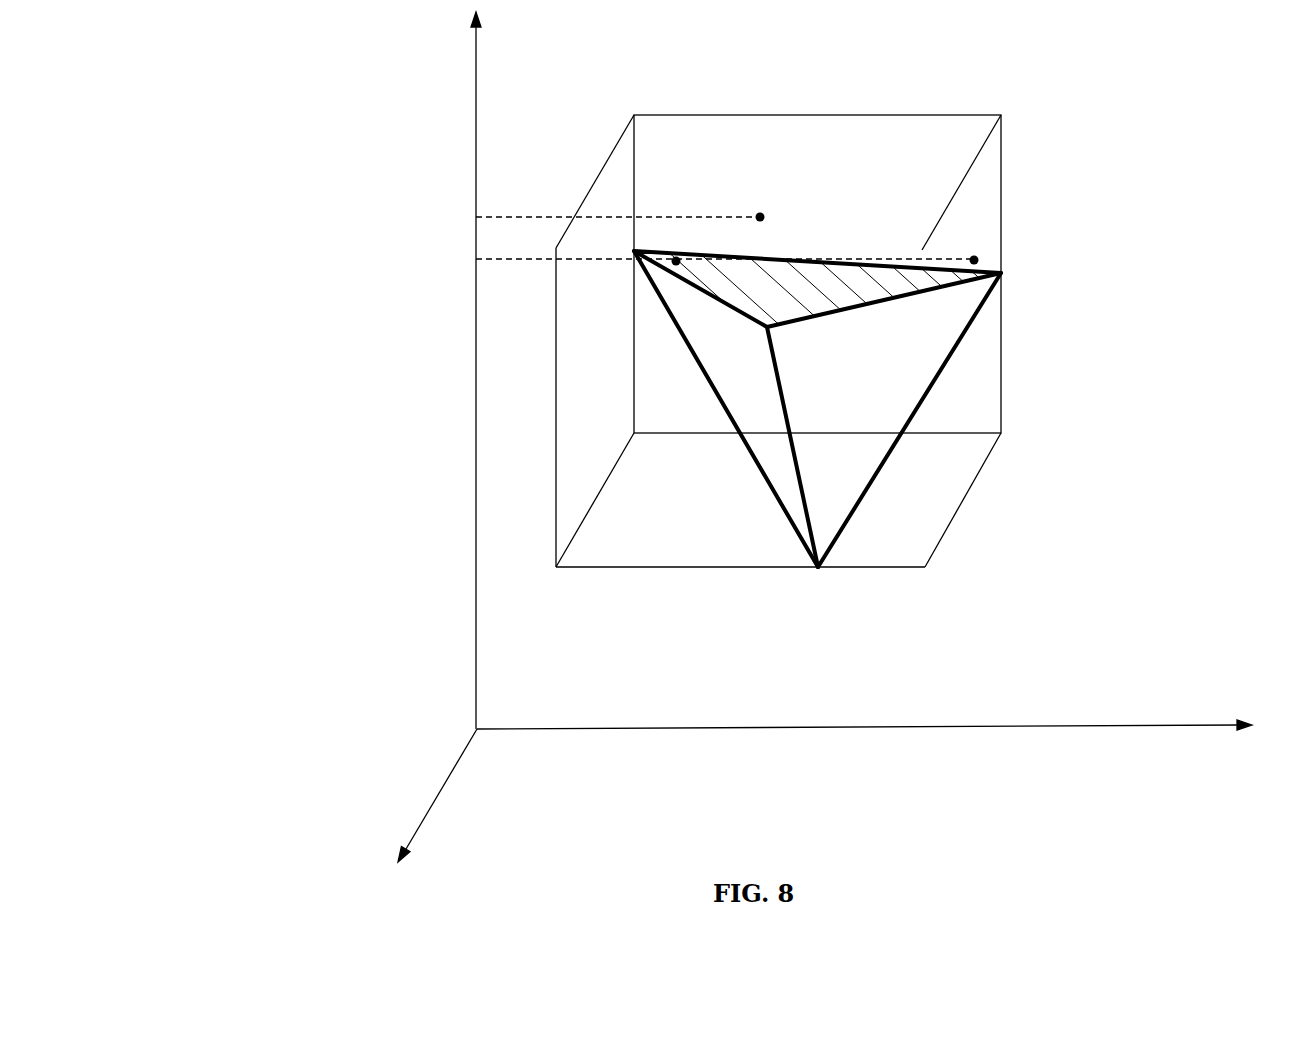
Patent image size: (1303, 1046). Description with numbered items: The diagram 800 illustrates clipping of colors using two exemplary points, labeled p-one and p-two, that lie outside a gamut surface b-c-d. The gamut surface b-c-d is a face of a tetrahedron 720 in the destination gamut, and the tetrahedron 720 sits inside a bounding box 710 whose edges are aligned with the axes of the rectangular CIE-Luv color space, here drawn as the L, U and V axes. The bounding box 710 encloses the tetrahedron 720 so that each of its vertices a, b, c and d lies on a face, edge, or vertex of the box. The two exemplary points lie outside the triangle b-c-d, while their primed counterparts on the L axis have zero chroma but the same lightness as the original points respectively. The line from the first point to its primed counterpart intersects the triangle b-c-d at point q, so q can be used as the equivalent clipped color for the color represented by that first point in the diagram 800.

The color space diagram 800 is at (270, 55).
The bounding box 710 is at (792, 346).
The tetrahedron 720 is at (966, 329).